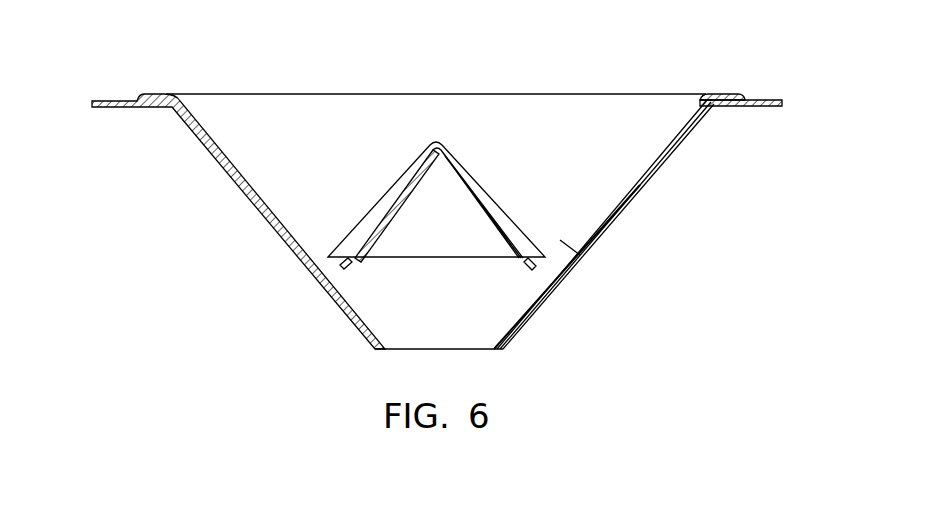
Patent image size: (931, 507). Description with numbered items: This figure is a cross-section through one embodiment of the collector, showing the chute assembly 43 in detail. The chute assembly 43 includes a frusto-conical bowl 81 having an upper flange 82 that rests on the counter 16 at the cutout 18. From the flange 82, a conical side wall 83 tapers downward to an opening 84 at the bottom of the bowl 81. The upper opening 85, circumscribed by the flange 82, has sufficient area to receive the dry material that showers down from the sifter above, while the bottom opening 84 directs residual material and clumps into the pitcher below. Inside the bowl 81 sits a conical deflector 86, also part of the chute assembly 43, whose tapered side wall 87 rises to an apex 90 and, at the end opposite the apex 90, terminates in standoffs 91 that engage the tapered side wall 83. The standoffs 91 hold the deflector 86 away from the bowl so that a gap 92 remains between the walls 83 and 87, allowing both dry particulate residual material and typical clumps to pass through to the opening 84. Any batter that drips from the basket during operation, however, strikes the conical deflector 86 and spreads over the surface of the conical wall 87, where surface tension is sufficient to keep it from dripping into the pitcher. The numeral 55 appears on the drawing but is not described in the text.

The chute assembly 43 is at (296, 78).
The insert assembly 55 is at (752, 60).
The counter 16 is at (747, 106).
The cutout 18 is at (715, 107).
The frusto-conical bowl 81 is at (678, 168).
The upper flange 82 is at (728, 93).
The conical side wall 83 is at (637, 187).
The opening 84 is at (472, 352).
The upper opening 85 is at (513, 125).
The conical deflector 86 is at (362, 196).
The tapered side wall 87 is at (350, 236).
The apex 90 is at (435, 141).
The standoffs 91 is at (345, 263).
The gap 92 is at (552, 260).